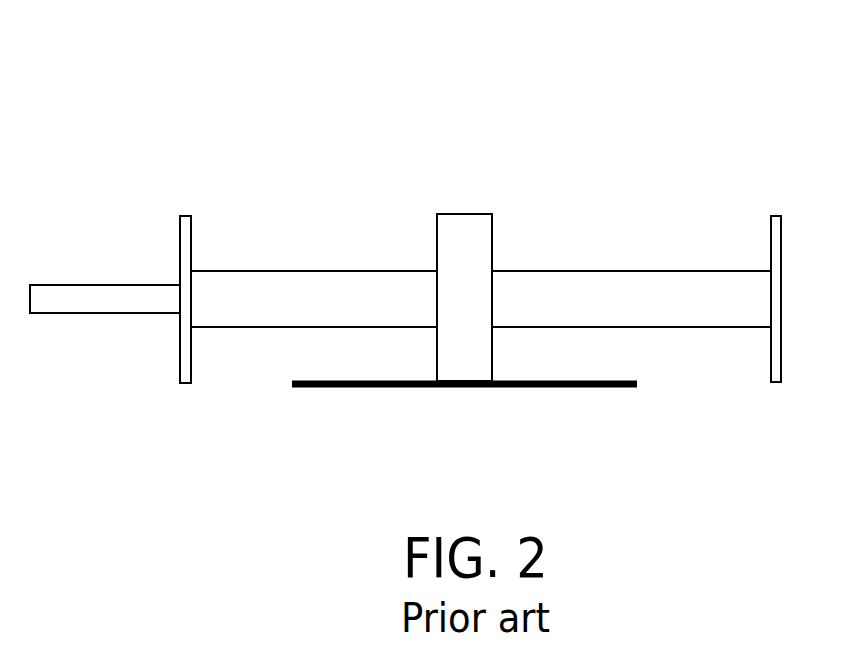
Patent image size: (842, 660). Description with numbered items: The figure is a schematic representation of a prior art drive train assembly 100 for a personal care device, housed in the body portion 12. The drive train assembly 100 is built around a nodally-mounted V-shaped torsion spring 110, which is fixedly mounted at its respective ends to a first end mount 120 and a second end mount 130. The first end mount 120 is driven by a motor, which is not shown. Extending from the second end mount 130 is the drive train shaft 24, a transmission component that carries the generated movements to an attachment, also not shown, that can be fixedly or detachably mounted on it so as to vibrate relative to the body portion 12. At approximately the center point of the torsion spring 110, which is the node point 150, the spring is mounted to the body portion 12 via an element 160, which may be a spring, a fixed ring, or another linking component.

The prior art drive train assembly 100 is at (124, 100).
The drive train shaft 24 is at (96, 285).
The nodally-mounted V-shaped torsion spring 110 is at (683, 271).
The first end mount 120 is at (776, 215).
The second end mount 130 is at (183, 215).
The node point 150 is at (497, 268).
The element 160 is at (464, 213).
The body portion 12 is at (604, 390).